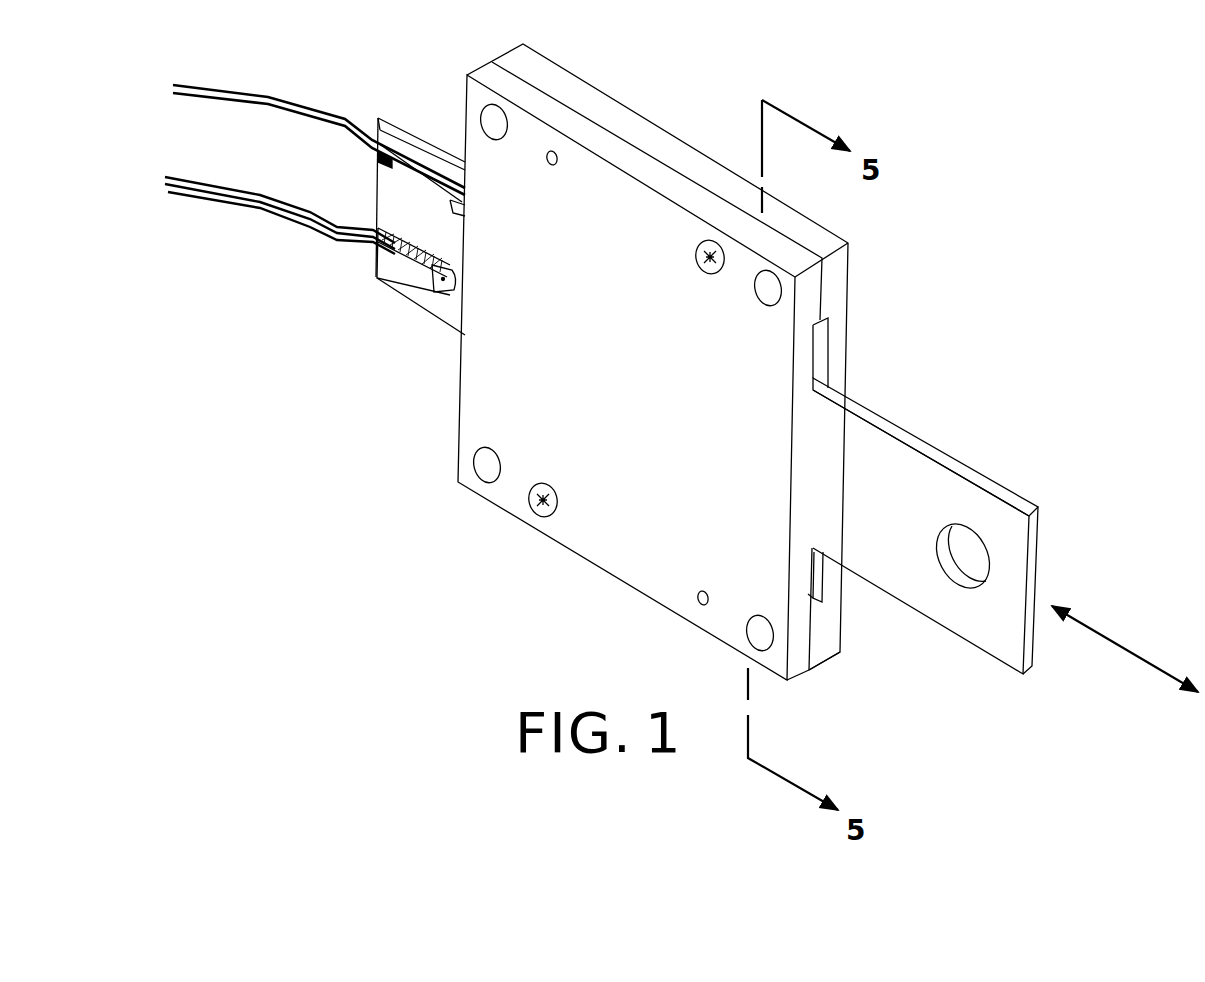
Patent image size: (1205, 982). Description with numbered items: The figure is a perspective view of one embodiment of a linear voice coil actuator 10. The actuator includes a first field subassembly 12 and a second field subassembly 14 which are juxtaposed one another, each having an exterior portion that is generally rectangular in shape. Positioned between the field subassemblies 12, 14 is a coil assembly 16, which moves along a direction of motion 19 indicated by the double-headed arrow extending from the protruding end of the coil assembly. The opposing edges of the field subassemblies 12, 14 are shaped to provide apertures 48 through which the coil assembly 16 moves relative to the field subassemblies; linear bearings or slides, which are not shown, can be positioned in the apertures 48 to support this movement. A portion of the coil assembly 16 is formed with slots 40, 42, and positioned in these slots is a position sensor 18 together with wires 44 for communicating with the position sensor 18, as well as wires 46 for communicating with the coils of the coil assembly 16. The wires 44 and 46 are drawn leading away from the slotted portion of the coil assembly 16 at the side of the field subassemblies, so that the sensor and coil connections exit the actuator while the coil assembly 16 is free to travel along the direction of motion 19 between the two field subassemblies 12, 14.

The linear voice coil actuator 10 is at (632, 78).
The first field subassembly 12 is at (472, 435).
The second field subassembly 14 is at (850, 286).
The coil assembly 16 is at (952, 492).
The position sensor 18 is at (440, 282).
The direction of motion 19 is at (1093, 634).
The slot 40 is at (377, 252).
The slot 42 is at (386, 163).
The wires 44 is at (197, 197).
The wires 46 is at (270, 97).
The aperture 48 is at (824, 340).